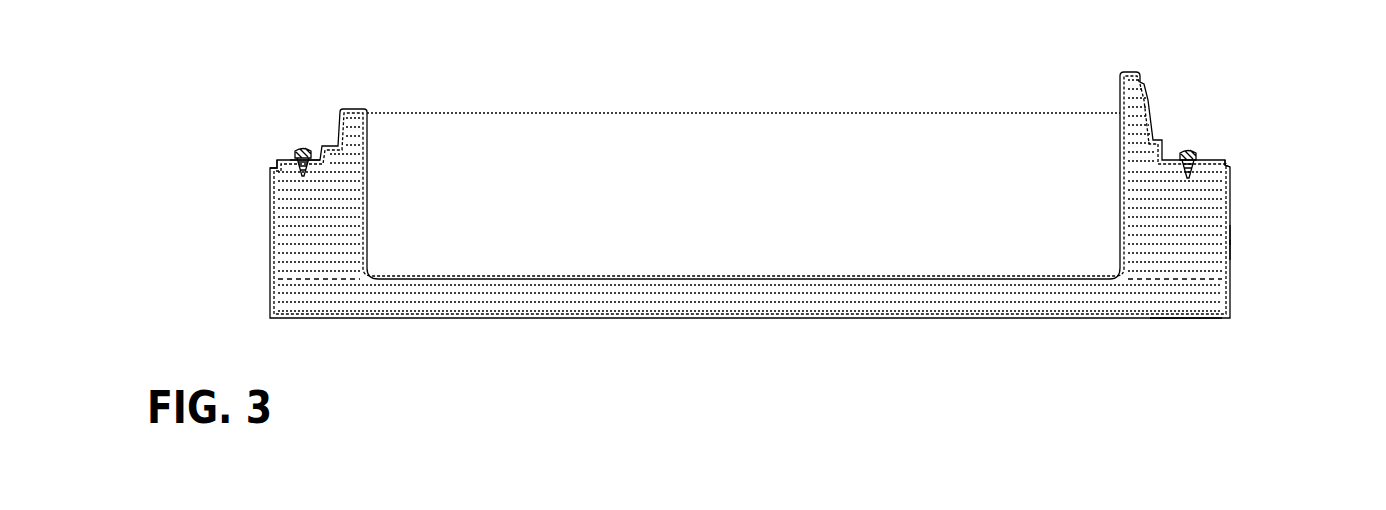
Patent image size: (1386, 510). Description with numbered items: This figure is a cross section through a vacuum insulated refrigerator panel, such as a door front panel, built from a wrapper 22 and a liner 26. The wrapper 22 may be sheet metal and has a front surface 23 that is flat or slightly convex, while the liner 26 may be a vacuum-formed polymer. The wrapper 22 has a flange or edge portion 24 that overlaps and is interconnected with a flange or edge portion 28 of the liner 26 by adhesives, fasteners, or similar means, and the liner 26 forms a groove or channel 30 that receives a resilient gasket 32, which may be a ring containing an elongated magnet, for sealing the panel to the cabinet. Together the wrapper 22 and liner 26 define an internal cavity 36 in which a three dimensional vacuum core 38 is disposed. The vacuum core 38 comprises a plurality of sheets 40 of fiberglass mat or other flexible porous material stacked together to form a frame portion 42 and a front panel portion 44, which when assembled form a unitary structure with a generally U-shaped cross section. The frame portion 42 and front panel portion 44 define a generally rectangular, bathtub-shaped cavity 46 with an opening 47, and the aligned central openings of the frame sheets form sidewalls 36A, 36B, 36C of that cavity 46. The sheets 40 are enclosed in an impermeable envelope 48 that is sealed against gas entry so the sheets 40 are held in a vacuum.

The wrapper 22 is at (589, 321).
The front surface 23 is at (712, 322).
The flange or edge portion 24 is at (278, 173).
The liner 26 is at (356, 110).
The flange or edge portion 28 is at (270, 167).
The groove or channel 30 is at (299, 158).
The resilient gasket 32 is at (303, 150).
The internal cavity 36 is at (1212, 222).
The sidewall 36A is at (367, 138).
The sidewall 36B is at (663, 155).
The sidewall 36C is at (1120, 130).
The three dimensional vacuum core 38 is at (1236, 179).
The sheets 40 is at (1222, 250).
The frame portion 42 is at (268, 250).
The front panel portion 44 is at (1188, 315).
The cavity 46 is at (931, 172).
The opening 47 is at (803, 136).
The impermeable envelope 48 is at (1232, 242).